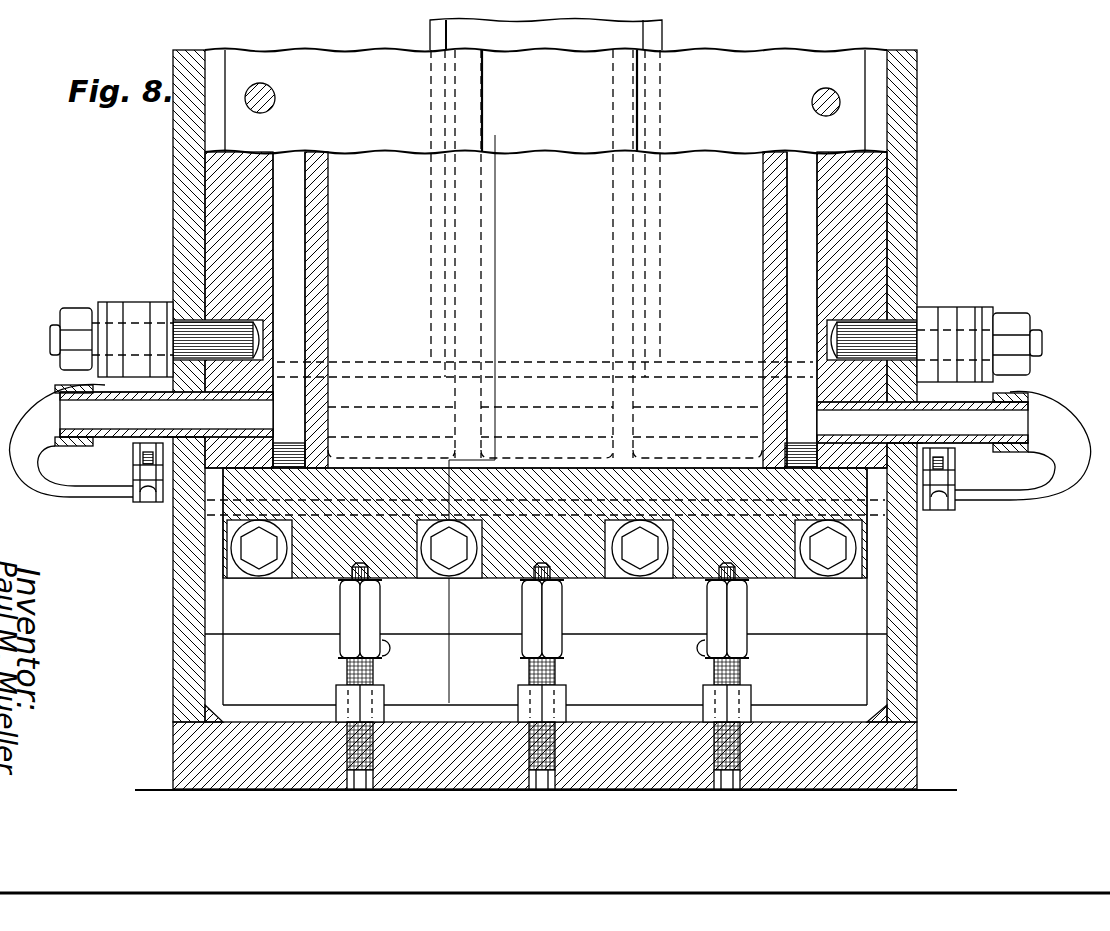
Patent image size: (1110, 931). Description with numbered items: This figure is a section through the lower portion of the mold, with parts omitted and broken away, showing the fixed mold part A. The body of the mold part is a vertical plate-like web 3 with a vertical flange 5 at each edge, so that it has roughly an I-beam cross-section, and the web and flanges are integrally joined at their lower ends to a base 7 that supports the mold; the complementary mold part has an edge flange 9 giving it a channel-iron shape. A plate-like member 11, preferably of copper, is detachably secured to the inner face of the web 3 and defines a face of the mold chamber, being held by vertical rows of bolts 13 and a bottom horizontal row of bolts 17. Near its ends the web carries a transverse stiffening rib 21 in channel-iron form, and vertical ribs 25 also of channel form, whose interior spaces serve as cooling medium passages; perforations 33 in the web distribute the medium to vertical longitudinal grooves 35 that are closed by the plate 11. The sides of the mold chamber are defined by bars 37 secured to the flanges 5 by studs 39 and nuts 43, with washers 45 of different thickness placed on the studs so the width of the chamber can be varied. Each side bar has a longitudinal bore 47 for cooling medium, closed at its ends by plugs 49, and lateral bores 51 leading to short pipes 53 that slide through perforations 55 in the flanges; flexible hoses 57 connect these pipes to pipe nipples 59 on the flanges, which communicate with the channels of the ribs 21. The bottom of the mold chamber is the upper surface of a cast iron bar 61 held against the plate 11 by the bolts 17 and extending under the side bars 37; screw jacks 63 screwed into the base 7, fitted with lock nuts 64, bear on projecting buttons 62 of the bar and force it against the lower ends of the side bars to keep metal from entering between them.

The web 3 is at (586, 150).
The vertical flange 5 is at (173, 126).
The base 7 is at (289, 730).
The edge flange 9 is at (486, 130).
The plate-like member 11 is at (398, 160).
The bolt 13 is at (268, 90).
The bolt 17 is at (259, 558).
The transverse stiffening rib 21 is at (374, 372).
The vertical rib 25 is at (655, 40).
The perforation 33 is at (410, 408).
The vertical longitudinal groove 35 is at (330, 102).
The bar 37 is at (318, 225).
The stud 39 is at (183, 304).
The nut 43 is at (76, 310).
The washer 45 is at (142, 304).
The longitudinal bore 47 is at (290, 272).
The plug 49 is at (290, 447).
The lateral bore 51 is at (544, 417).
The pipe 53 is at (150, 392).
The perforation 55 is at (195, 440).
The flexible hose 57 is at (78, 478).
The pipe nipple 59 is at (130, 480).
The bar 61 is at (328, 572).
The projecting button 62 is at (368, 573).
The screw jack 63 is at (372, 620).
The lock nut 64 is at (374, 698).
The fixed mold part A is at (175, 626).